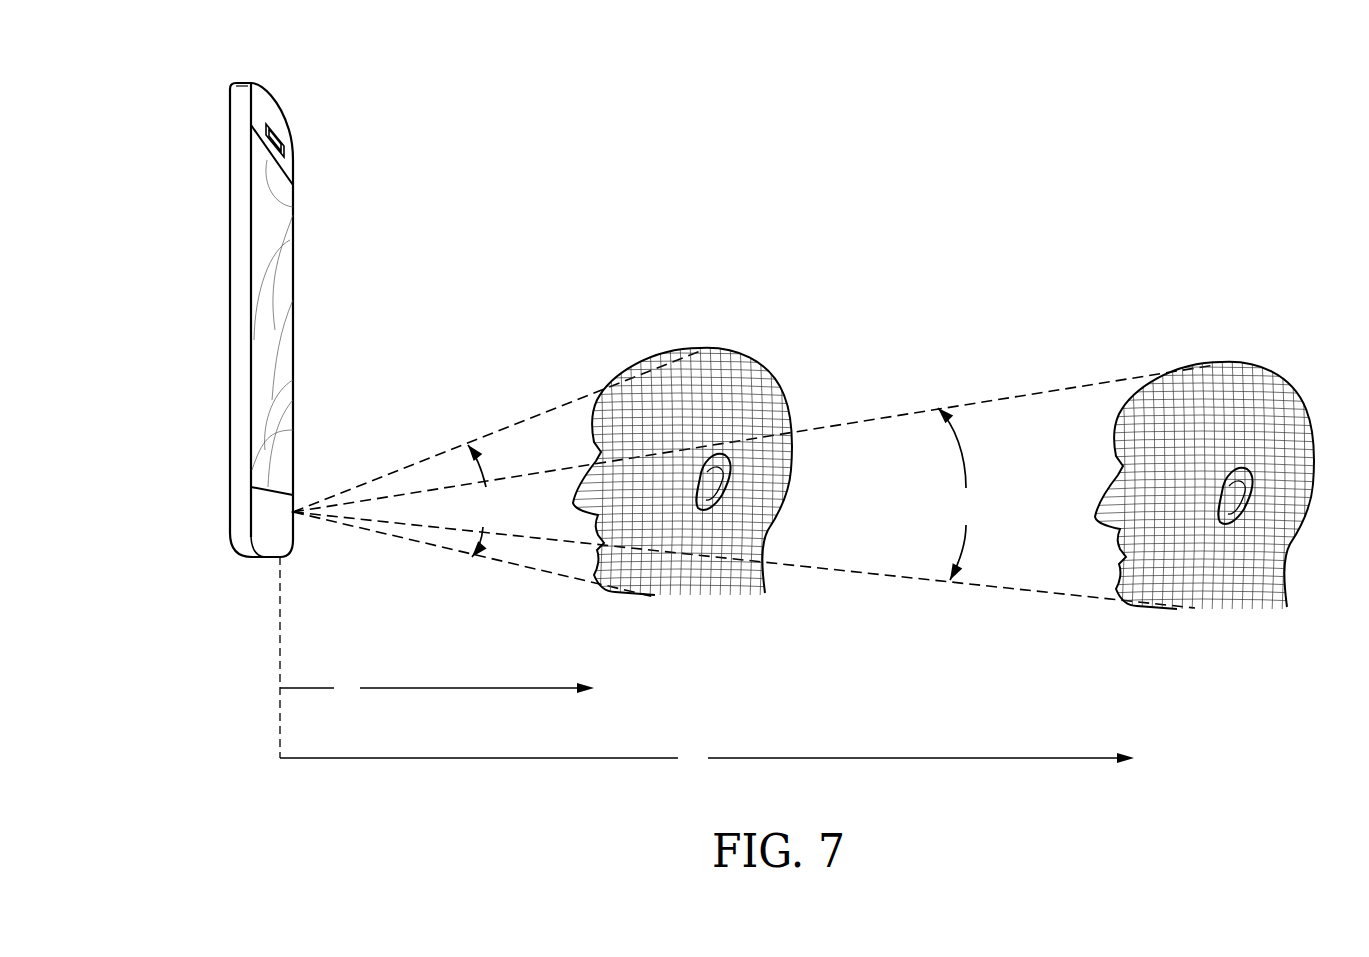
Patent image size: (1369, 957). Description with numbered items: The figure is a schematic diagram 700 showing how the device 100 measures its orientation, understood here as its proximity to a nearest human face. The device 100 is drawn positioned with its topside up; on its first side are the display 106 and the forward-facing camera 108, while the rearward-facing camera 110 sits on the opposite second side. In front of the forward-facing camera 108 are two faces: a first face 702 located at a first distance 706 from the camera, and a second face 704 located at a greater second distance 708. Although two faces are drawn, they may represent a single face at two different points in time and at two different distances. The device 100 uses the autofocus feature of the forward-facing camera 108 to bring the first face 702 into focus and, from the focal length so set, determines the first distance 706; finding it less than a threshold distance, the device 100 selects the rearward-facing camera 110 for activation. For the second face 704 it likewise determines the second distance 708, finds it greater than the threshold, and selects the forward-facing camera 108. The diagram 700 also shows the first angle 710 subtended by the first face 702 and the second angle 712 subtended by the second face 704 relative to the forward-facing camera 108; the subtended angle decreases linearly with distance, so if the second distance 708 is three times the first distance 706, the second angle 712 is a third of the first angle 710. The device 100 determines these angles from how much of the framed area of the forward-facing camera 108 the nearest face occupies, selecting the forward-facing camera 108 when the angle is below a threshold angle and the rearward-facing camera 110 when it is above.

The device 100 is at (230, 313).
The display 106 is at (308, 279).
The forward-facing camera 108 is at (295, 508).
The rearward-facing camera 110 is at (200, 208).
The diagram 700 is at (1203, 150).
The first face 702 is at (683, 347).
The second face 704 is at (1212, 360).
The distance d1 706 is at (279, 688).
The distance d2 708 is at (279, 758).
The angle θ1 710 is at (488, 486).
The angle θ2 712 is at (966, 492).